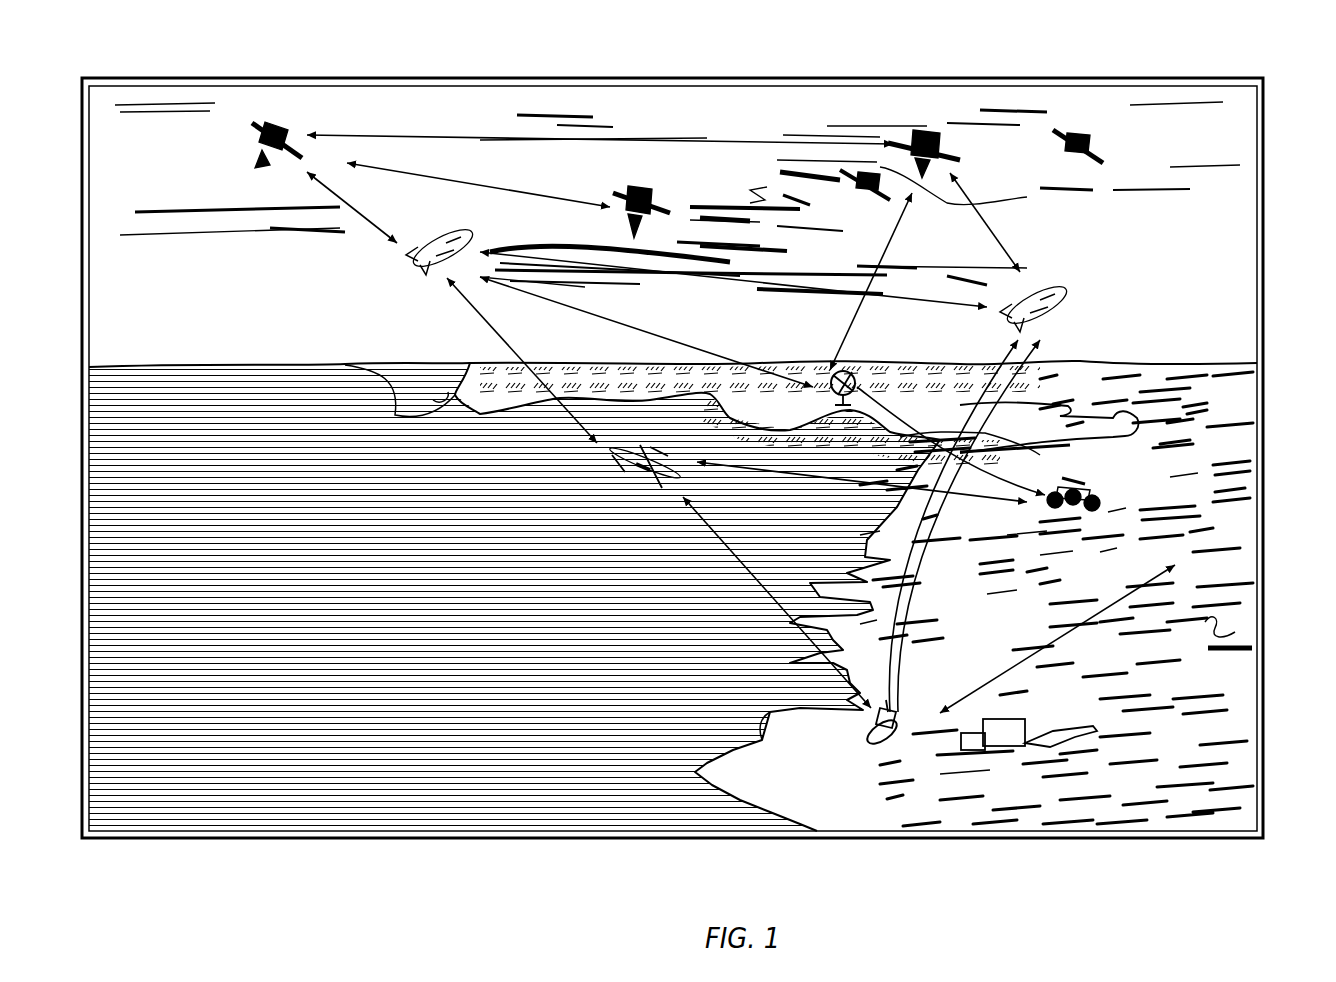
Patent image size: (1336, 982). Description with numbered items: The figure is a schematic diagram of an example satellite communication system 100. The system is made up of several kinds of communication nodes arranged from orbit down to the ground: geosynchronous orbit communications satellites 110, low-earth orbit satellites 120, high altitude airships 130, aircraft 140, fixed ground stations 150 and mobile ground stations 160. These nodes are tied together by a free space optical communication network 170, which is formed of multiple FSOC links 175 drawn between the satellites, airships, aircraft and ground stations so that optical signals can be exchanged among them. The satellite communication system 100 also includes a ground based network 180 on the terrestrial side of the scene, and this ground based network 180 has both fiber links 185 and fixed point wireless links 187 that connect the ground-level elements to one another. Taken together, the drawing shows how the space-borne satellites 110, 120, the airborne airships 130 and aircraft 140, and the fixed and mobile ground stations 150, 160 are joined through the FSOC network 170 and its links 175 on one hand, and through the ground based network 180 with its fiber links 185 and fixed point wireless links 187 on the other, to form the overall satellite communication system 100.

The satellite communication system 100 is at (1219, 59).
The geosynchronous orbit communications satellites 110 is at (267, 127).
The low-earth orbit satellites 120 is at (646, 184).
The high altitude airships 130 is at (1040, 288).
The aircraft 140 is at (683, 478).
The fixed ground stations 150 is at (826, 372).
The mobile ground stations 160 is at (1074, 482).
The free space optical communication network 170 is at (531, 131).
The FSOC links 175 is at (356, 197).
The ground based network 180 is at (1223, 689).
The fiber links 185 is at (898, 645).
The fixed point wireless links 187 is at (1018, 662).